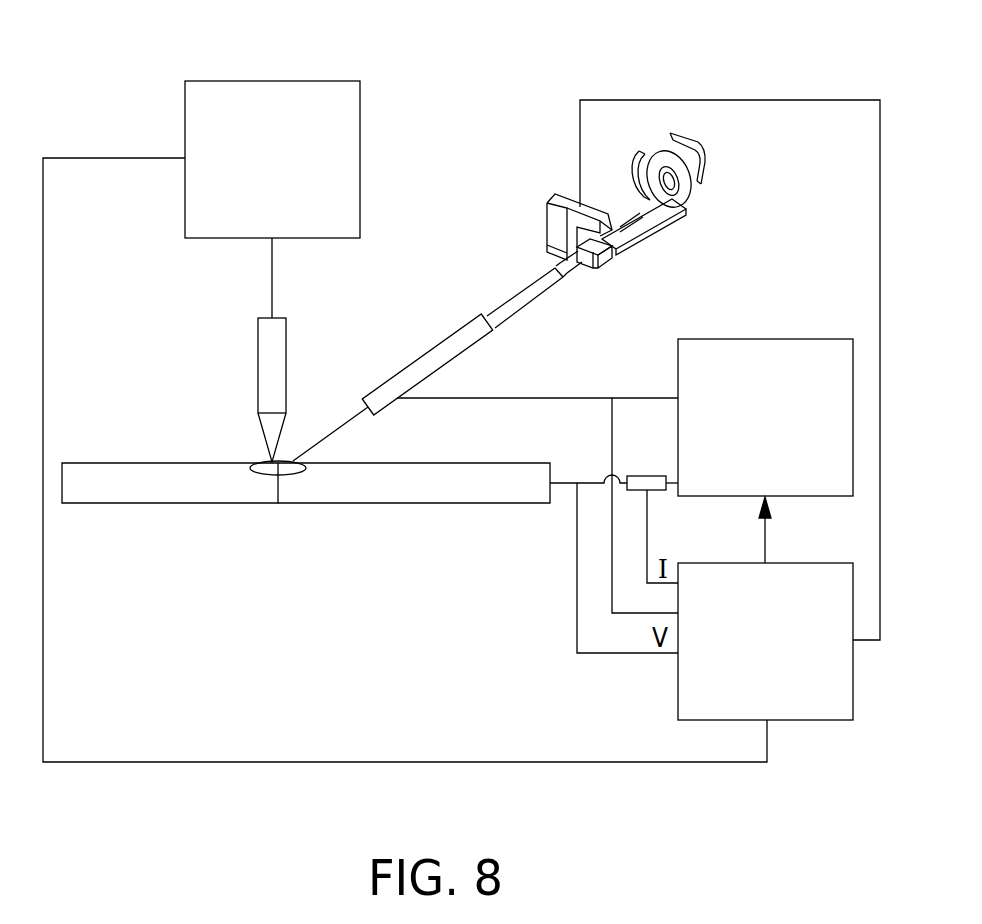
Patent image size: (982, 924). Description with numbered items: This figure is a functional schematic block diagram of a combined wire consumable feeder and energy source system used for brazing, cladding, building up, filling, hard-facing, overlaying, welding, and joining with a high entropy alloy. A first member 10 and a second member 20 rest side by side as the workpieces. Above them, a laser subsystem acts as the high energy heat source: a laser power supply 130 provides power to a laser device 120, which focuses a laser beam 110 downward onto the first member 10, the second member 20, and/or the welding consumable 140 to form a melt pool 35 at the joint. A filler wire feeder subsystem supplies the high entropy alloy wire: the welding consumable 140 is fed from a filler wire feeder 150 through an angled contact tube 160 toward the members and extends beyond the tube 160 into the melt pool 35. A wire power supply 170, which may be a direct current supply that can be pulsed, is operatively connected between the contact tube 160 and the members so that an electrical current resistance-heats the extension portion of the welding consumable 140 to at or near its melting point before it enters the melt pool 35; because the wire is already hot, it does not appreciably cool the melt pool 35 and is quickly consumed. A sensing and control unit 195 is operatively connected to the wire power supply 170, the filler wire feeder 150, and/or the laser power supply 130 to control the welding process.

The first member 10 is at (142, 503).
The second member 20 is at (436, 503).
The melt pool 35 is at (298, 460).
The laser beam 110 is at (263, 428).
The laser device 120 is at (258, 358).
The laser power supply 130 is at (318, 80).
The welding consumable 140 is at (336, 432).
The filler wire feeder 150 is at (655, 246).
The contact tube 160 is at (437, 344).
The wire power supply 170 is at (797, 338).
The sensing and control unit 195 is at (678, 697).